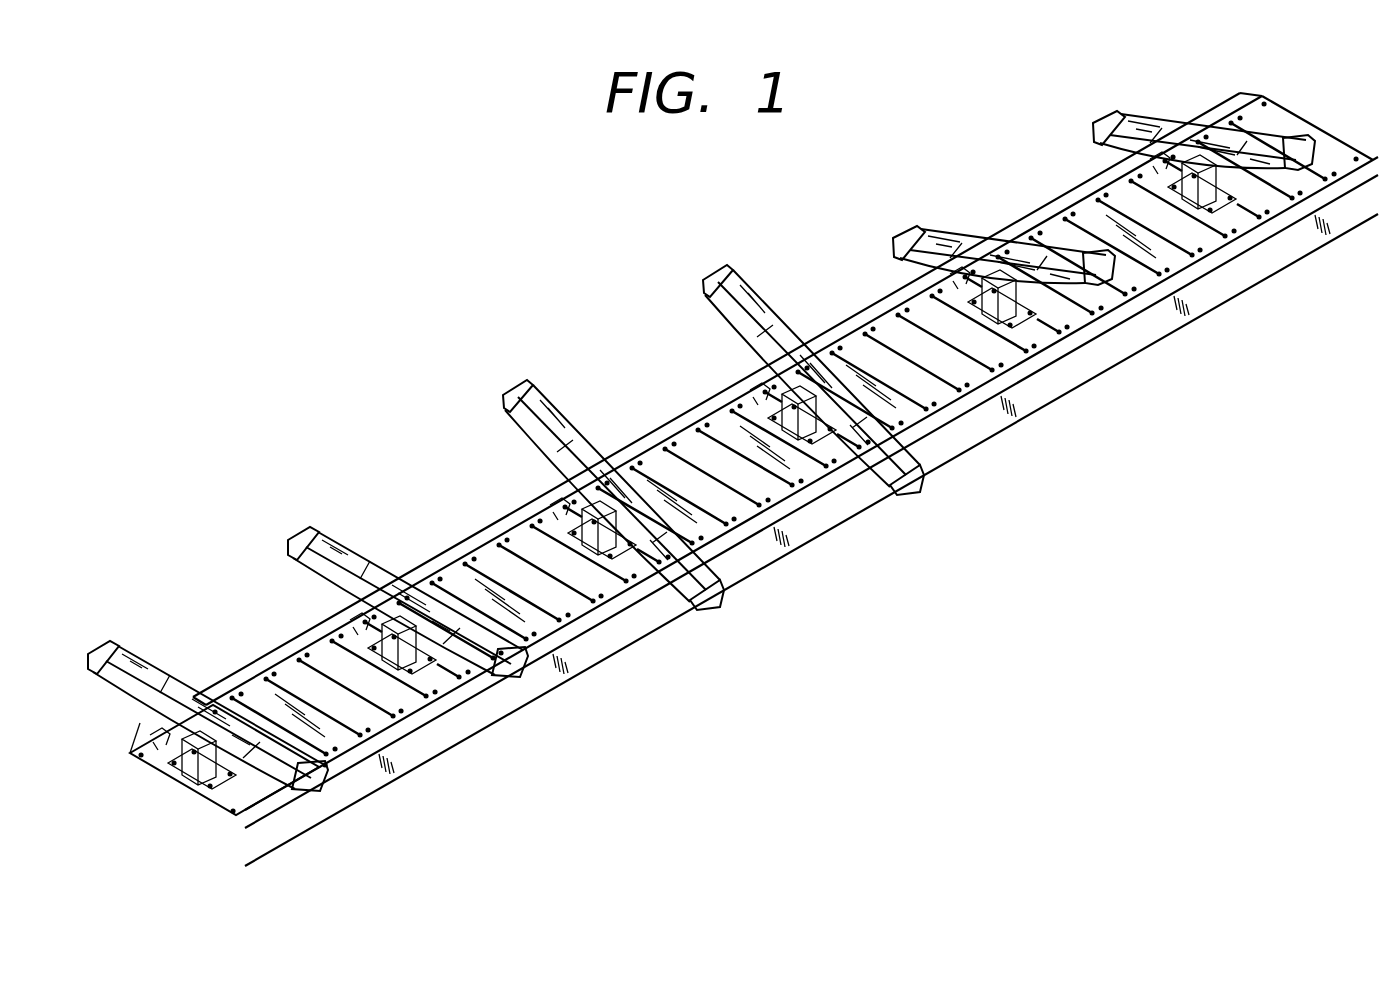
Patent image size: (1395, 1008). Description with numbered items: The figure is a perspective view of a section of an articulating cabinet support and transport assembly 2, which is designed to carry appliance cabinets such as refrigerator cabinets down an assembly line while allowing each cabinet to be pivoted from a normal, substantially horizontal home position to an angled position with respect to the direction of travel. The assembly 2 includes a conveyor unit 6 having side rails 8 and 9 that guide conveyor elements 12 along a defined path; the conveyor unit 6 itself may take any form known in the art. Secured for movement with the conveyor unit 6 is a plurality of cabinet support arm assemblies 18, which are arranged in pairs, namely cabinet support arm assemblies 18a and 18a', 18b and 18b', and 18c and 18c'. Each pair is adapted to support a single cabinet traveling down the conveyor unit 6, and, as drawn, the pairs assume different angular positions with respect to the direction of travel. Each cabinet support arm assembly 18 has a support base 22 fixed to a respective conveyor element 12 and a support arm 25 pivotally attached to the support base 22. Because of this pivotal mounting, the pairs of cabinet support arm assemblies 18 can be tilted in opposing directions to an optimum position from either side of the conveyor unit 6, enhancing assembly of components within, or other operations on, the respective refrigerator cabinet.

The articulating cabinet support and transport assembly 2 is at (364, 242).
The conveyor unit 6 is at (1140, 370).
The side rail 8 is at (872, 305).
The side rail 9 is at (1037, 400).
The conveyor elements 12 is at (955, 405).
The cabinet support arm assemblies 18 is at (296, 512).
The cabinet support arm assembly 18a is at (208, 688).
The cabinet support arm assembly 18a' is at (410, 579).
The cabinet support arm assembly 18b is at (613, 471).
The cabinet support arm assembly 18b' is at (813, 356).
The cabinet support arm assembly 18c is at (1004, 250).
The cabinet support arm assembly 18c' is at (1204, 135).
The support base 22 is at (420, 660).
The support arm 25 is at (578, 460).